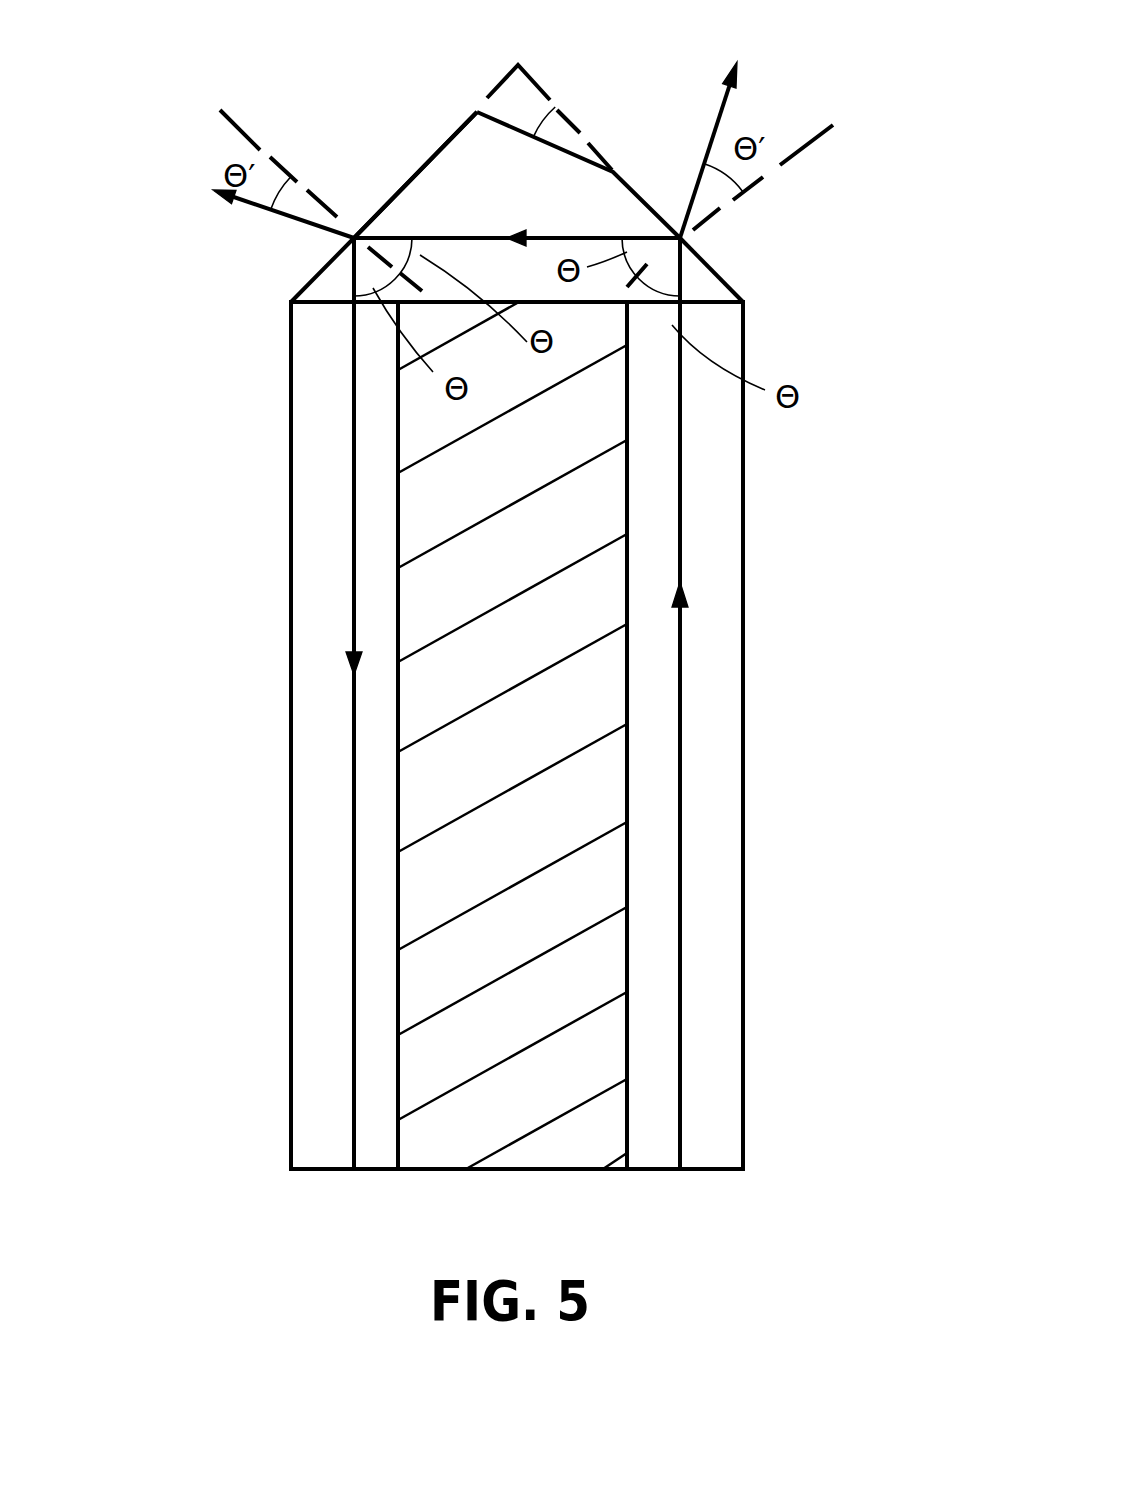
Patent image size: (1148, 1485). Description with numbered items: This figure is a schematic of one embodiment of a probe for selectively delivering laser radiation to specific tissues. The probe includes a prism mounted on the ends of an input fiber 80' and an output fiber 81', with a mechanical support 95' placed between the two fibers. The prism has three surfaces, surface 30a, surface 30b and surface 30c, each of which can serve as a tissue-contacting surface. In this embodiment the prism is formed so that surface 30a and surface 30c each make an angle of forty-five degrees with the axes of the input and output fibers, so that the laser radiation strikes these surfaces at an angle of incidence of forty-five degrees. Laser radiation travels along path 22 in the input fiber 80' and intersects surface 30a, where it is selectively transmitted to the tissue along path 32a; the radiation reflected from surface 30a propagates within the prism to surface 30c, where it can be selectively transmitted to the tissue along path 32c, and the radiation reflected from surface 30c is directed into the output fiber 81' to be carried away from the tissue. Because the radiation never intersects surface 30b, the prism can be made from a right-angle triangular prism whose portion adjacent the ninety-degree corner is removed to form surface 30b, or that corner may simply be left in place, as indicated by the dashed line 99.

The dashed line 99 is at (508, 68).
The surface 30b is at (550, 102).
The surface 30c is at (407, 177).
The tissue-contacting surface 30a is at (727, 277).
The path 32a is at (690, 200).
The path 32c is at (253, 207).
The path 22 is at (682, 513).
The mechanical support 95' is at (512, 735).
The output fiber 81' is at (276, 735).
The input fiber 80' is at (741, 735).